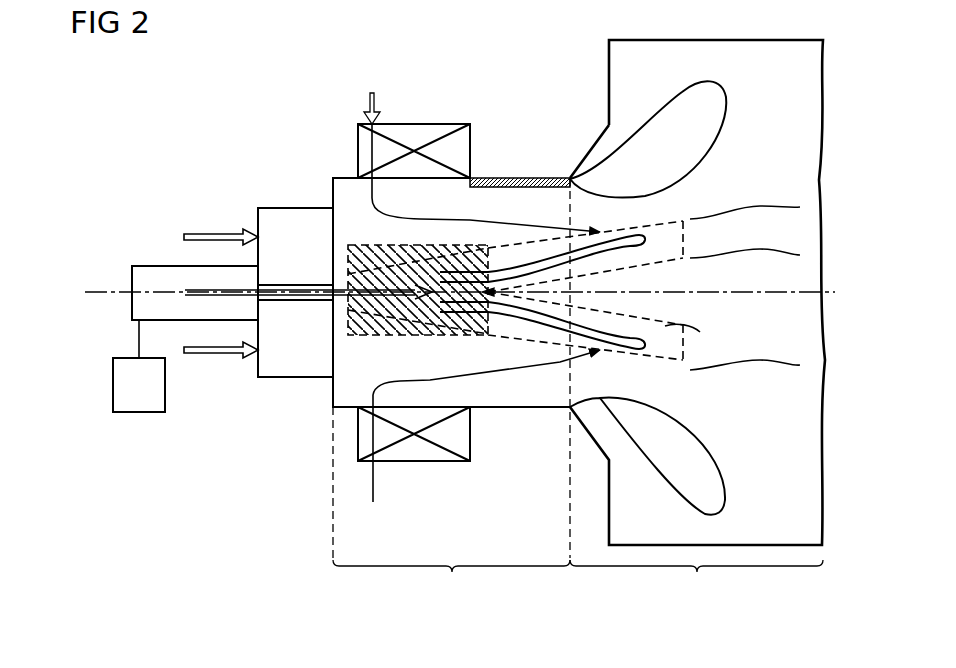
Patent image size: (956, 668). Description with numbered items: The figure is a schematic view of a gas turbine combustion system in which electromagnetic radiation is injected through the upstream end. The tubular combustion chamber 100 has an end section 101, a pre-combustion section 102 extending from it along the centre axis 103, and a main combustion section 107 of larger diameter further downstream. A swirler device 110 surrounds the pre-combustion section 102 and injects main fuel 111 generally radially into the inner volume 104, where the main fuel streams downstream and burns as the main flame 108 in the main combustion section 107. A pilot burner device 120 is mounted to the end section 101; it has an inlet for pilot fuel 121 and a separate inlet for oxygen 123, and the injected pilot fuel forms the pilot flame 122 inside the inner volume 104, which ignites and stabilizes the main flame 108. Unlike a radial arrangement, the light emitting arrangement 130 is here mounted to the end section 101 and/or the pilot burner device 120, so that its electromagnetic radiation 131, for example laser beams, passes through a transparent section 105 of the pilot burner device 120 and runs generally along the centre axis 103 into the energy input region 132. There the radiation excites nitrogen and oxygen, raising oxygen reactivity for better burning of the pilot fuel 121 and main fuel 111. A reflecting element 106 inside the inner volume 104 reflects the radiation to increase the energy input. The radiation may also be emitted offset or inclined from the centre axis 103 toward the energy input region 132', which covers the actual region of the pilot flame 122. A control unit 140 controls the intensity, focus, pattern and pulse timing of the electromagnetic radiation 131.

The combustion chamber 100 is at (578, 80).
The end section 101 is at (332, 190).
The pre-combustion section 102 is at (451, 582).
The centre axis 103 is at (103, 290).
The inner volume 104 is at (512, 352).
The transparent section 105 is at (298, 301).
The reflecting element 106 is at (526, 177).
The main combustion section 107 is at (696, 501).
The main flame 108 is at (735, 118).
The swirler device 110 is at (433, 455).
The main fuel 111 is at (368, 98).
The pilot burner device 120 is at (297, 378).
The pilot fuel 121 is at (209, 229).
The pilot flame 122 is at (505, 312).
The oxygen 123 is at (210, 357).
The light emitting arrangement 130 is at (132, 310).
The electromagnetic radiation 131 is at (193, 290).
The energy input region 132 is at (482, 290).
The energy input region 132' is at (732, 288).
The control unit 140 is at (140, 413).